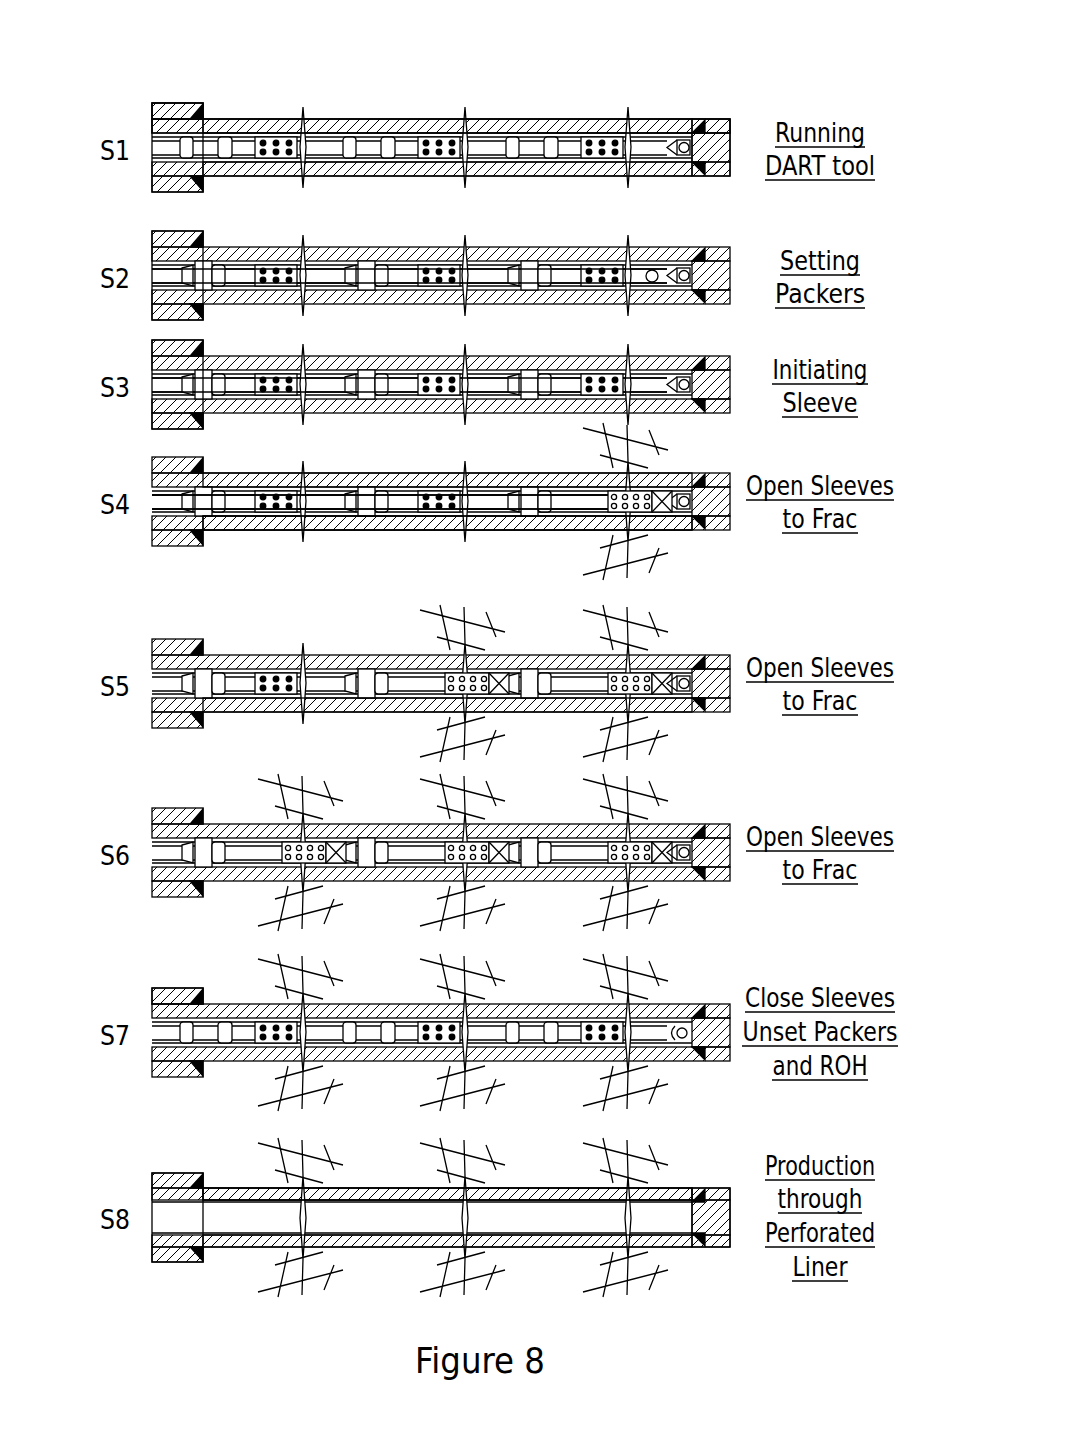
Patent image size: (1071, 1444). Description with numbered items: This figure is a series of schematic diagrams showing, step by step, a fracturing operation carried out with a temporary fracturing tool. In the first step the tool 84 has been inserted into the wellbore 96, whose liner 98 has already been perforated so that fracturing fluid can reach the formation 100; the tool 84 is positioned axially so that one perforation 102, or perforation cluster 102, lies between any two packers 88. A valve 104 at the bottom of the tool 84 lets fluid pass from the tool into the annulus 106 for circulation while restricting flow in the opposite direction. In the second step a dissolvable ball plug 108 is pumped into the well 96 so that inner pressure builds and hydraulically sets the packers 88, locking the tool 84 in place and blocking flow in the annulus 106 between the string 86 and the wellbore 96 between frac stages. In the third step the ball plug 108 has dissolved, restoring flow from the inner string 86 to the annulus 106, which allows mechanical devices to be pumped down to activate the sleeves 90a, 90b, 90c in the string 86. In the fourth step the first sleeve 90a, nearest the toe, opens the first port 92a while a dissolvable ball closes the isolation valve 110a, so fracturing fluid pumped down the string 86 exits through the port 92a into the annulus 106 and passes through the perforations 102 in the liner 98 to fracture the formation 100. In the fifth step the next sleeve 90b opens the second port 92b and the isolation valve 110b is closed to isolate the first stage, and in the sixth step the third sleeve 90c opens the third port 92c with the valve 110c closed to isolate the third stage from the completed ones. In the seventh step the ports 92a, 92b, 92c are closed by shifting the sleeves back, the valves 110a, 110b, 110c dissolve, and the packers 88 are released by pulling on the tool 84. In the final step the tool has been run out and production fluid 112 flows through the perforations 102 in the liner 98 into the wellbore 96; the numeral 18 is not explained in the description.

The wellbore 18 is at (607, 531).
The tool 84 is at (229, 98).
The string 86 is at (330, 374).
The packers 88 is at (530, 137).
The first sleeve 90a is at (597, 374).
The second sleeve 90b is at (432, 374).
The third sleeve 90c is at (272, 374).
The first port 92a is at (657, 490).
The second port 92b is at (494, 676).
The third port 92c is at (332, 846).
The wellbore 96 is at (133, 122).
The liner 98 is at (330, 119).
The formation 100 is at (461, 70).
The perforation 102 is at (630, 131).
The valve 104 is at (700, 140).
The annulus 106 is at (652, 133).
The dissolvable ball plug 108 is at (653, 270).
The isolation valve 110a is at (662, 508).
The isolation valve 110b is at (505, 700).
The valve 110c is at (340, 870).
The production fluid 112 is at (726, 1190).